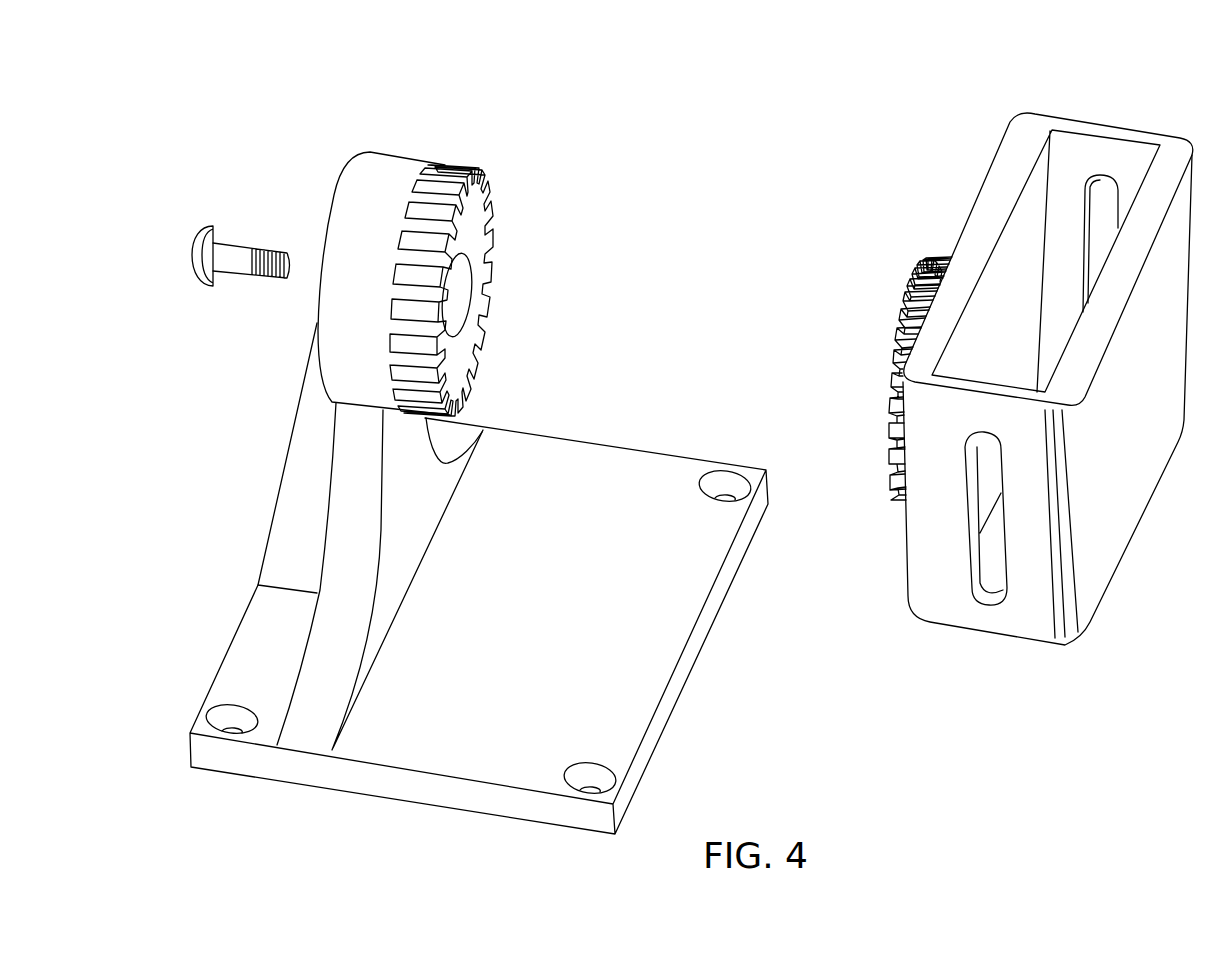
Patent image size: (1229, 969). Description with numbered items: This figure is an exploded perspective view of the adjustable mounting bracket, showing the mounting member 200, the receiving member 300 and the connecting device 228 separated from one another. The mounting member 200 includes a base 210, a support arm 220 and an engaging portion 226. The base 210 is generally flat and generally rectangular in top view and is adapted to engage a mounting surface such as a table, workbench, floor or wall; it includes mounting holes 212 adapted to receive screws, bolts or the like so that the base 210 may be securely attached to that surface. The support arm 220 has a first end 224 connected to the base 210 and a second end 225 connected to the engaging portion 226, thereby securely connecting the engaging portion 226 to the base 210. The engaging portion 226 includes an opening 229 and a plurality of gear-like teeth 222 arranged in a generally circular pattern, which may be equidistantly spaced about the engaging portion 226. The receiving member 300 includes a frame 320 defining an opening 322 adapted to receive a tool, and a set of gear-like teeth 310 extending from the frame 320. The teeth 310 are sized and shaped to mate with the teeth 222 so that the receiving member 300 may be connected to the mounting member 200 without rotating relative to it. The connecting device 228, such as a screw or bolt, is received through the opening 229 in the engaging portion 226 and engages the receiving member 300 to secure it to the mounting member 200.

The mounting member 200 is at (425, 150).
The base 210 is at (612, 462).
The mounting holes 212 is at (238, 716).
The support arm 220 is at (291, 522).
The gear-like teeth 222 is at (497, 206).
The first end 224 is at (415, 543).
The second end 225 is at (341, 468).
The engaging portion 226 is at (338, 323).
The connecting device 228 is at (244, 224).
The opening 229 is at (462, 294).
The receiving member 300 is at (1113, 108).
The gear-like teeth 310 is at (920, 275).
The frame 320 is at (1157, 131).
The opening 322 is at (1062, 165).